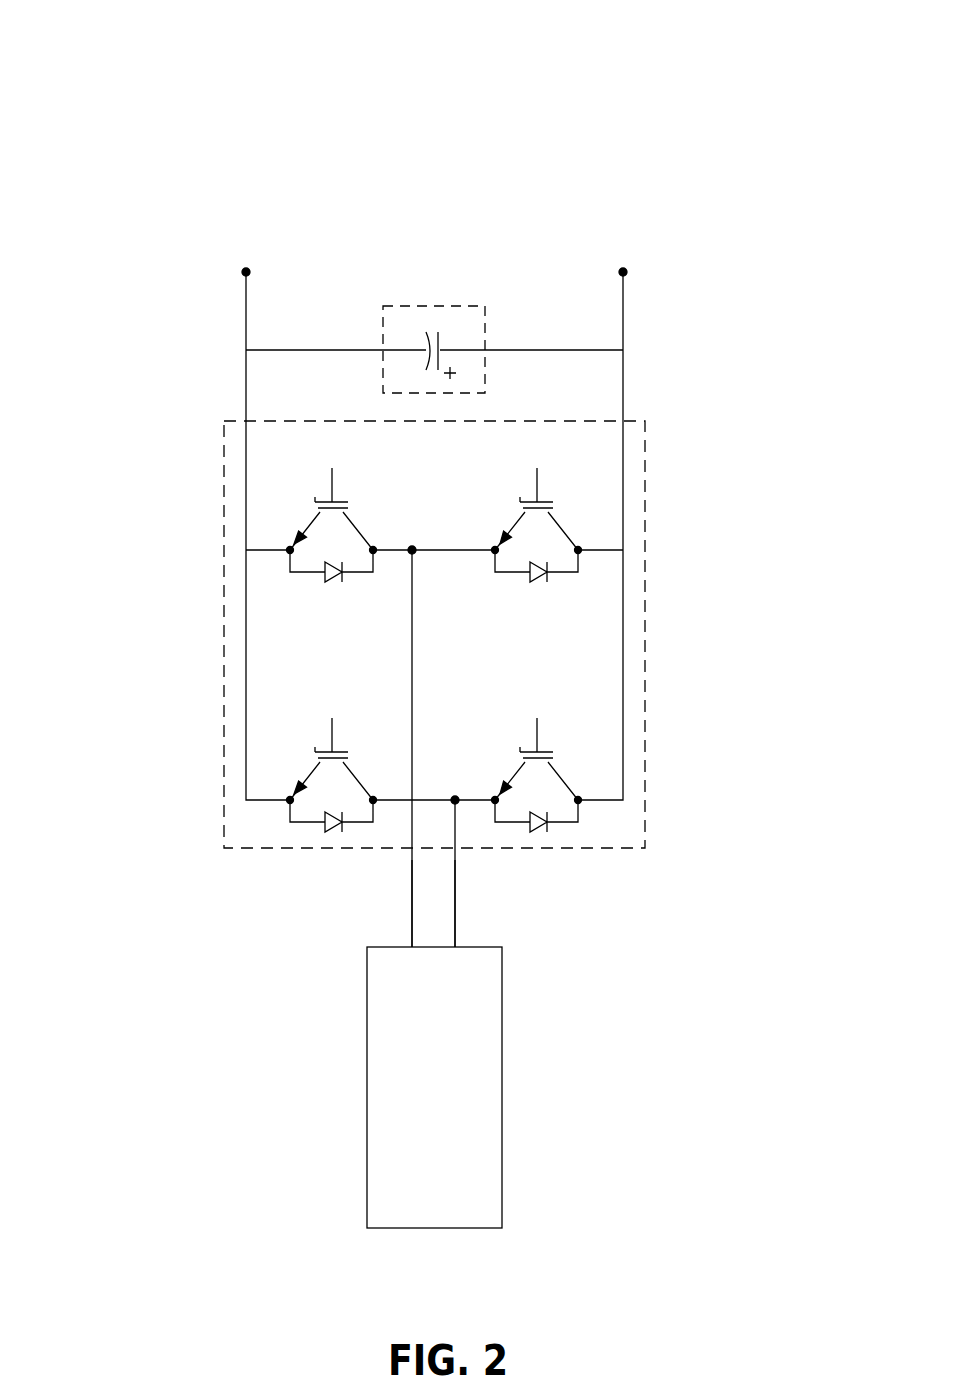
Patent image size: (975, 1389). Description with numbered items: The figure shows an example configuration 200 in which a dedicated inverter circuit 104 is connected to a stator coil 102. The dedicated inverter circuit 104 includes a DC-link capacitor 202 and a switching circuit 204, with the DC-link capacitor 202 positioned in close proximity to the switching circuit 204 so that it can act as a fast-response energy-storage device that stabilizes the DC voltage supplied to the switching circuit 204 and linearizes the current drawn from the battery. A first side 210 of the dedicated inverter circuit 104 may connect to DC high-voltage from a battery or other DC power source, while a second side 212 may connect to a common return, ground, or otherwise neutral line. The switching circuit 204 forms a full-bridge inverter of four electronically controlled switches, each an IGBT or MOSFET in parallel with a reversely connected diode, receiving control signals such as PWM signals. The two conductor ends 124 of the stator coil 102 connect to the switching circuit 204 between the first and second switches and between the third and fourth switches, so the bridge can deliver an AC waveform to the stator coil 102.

The example configuration 200 is at (90, 27).
The dedicated inverter circuit 104 is at (179, 330).
The second side 212 is at (246, 270).
The first side 210 is at (624, 270).
The DC-link capacitor 202 is at (442, 306).
The switching circuit 204 is at (645, 421).
The conductor ends 124 is at (413, 925).
The stator coil 102 is at (502, 1047).